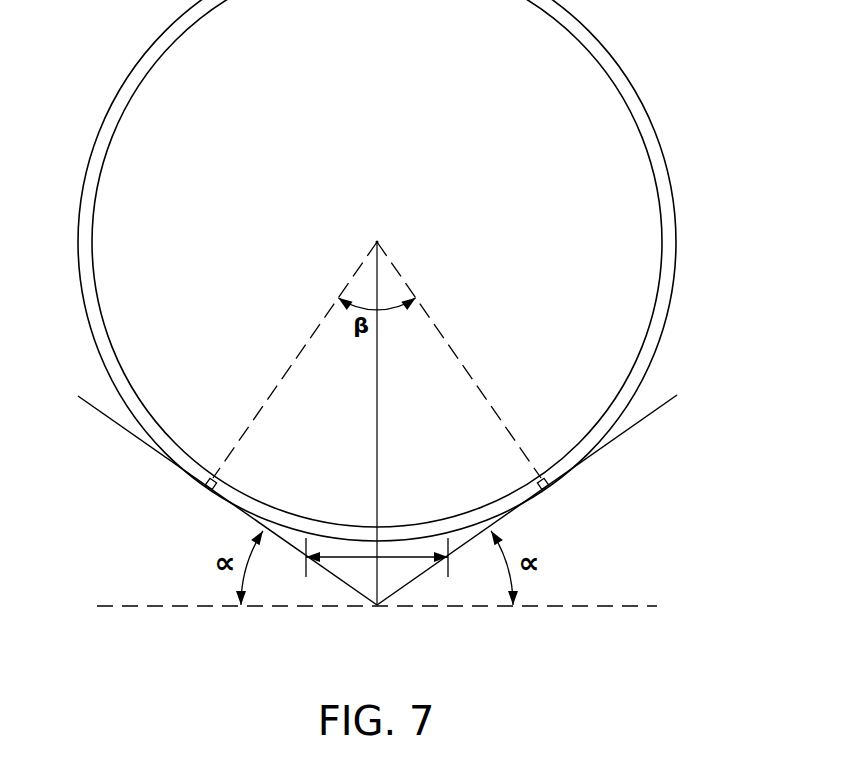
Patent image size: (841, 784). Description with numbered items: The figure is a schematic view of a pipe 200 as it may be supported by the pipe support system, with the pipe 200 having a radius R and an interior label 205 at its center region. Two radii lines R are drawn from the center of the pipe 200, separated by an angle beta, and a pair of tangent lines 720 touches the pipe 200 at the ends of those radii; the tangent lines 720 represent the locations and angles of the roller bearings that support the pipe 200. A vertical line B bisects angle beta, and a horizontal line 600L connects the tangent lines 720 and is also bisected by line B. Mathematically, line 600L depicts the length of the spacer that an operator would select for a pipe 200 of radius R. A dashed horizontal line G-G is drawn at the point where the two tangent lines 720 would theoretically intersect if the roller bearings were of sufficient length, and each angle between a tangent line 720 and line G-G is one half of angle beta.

The pipe 200 is at (677, 238).
The tire center axis 205 is at (361, 202).
The tangent lines 720 is at (108, 418).
The horizontal line 600L is at (357, 558).
The radius R is at (431, 318).
The line B is at (377, 428).
The line G- G is at (378, 607).